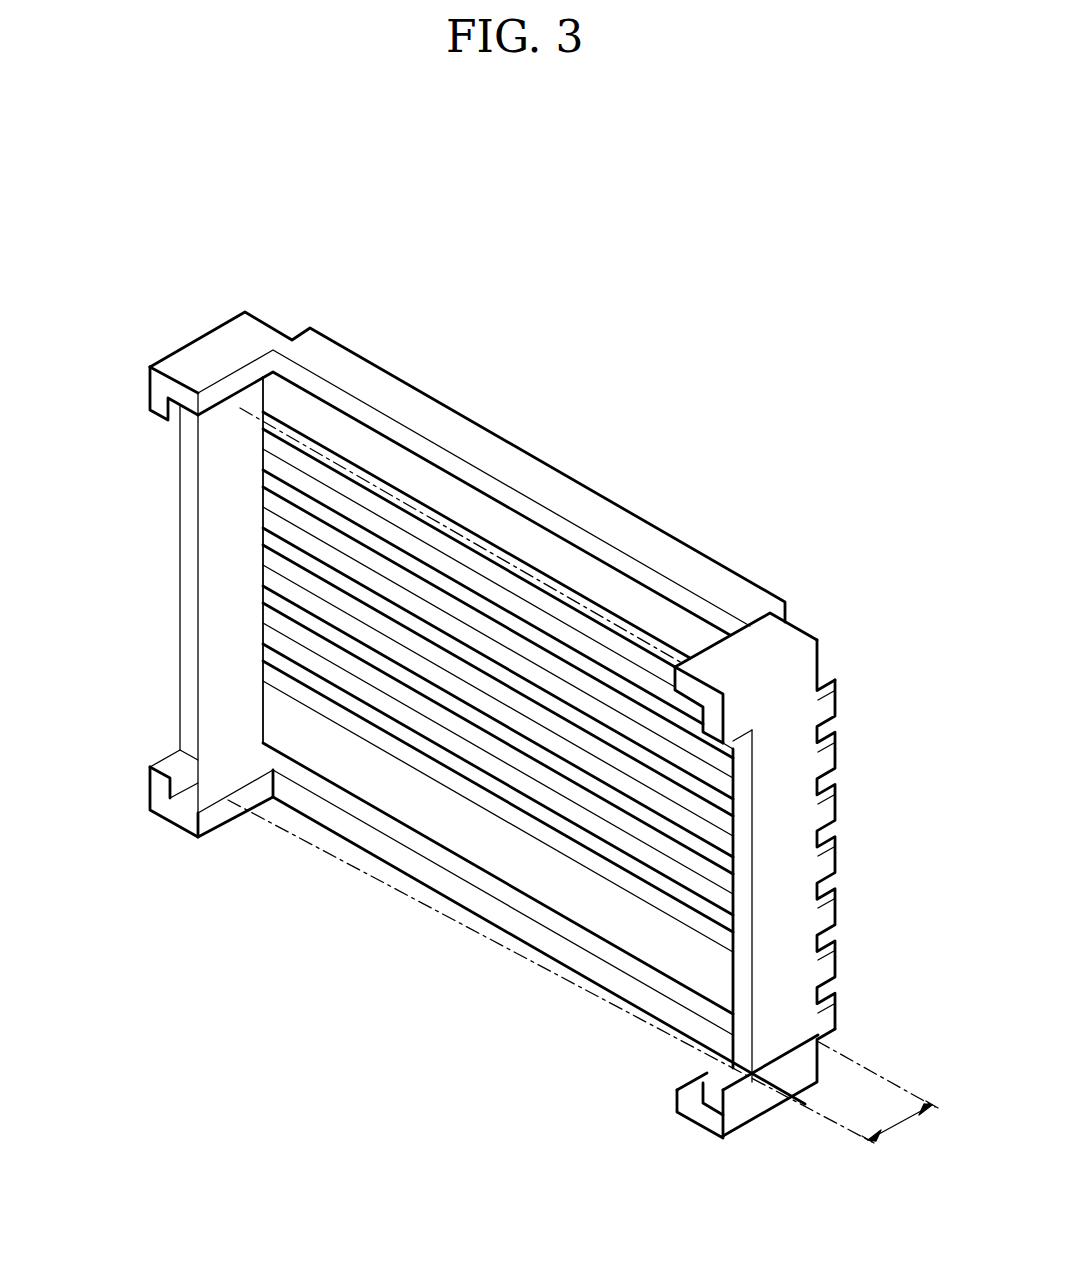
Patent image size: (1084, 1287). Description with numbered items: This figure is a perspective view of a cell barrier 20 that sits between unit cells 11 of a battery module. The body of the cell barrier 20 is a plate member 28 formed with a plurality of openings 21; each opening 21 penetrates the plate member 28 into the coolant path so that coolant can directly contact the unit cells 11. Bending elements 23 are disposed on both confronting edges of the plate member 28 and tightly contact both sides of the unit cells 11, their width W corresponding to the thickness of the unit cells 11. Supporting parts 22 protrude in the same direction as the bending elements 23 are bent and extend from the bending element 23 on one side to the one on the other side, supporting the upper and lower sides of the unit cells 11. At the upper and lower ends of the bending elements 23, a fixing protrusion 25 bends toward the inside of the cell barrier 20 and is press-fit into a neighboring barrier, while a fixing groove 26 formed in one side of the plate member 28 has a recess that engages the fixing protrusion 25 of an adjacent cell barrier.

The unit cells 11 is at (383, 907).
The cell barrier 20 is at (478, 410).
The openings 21 is at (395, 665).
The supporting parts 22 is at (628, 568).
The bending elements 23 is at (217, 598).
The fixing protrusion 25 is at (713, 1120).
The fixing groove 26 is at (827, 667).
The plate member 28 is at (680, 957).